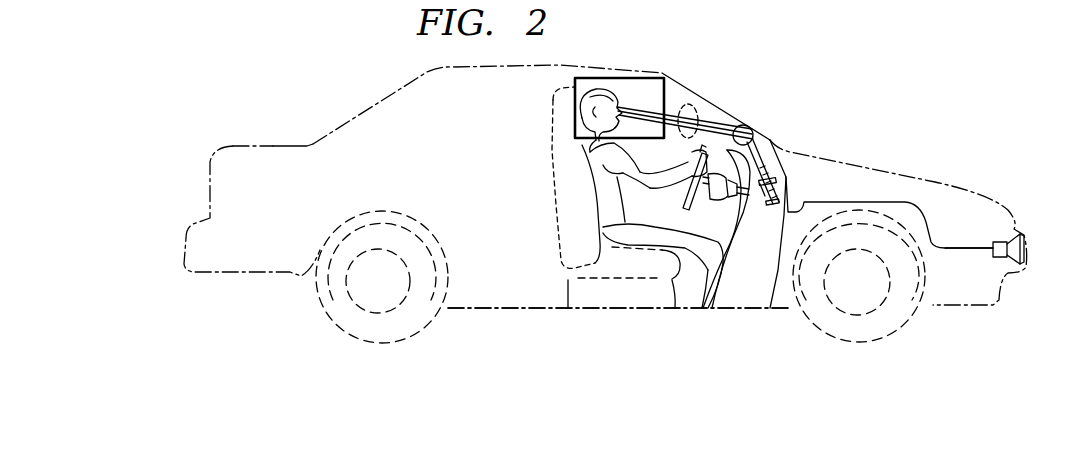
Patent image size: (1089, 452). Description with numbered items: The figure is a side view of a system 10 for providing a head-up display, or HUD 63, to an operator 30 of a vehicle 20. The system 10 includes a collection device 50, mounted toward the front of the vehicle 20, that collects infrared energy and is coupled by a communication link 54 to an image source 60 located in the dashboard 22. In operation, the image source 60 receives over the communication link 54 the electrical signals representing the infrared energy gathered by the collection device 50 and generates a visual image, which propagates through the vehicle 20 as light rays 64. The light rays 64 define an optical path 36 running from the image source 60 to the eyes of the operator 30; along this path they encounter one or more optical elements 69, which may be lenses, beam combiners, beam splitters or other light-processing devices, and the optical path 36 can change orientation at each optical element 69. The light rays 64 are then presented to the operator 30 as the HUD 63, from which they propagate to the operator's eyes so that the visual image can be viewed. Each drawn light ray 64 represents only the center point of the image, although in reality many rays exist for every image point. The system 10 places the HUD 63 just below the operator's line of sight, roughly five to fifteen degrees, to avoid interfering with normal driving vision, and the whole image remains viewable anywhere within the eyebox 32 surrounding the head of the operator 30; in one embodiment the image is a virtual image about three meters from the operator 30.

The system 10 is at (856, 76).
The vehicle 20 is at (292, 146).
The dashboard 22 is at (741, 309).
The operator 30 is at (573, 101).
The eyebox 32 is at (622, 77).
The optical path 36 is at (693, 104).
The HUD 63 is at (742, 125).
The optical elements 69 is at (771, 139).
The image source 60 is at (771, 206).
The light rays 64 is at (747, 195).
The communication link 54 is at (965, 247).
The collection device 50 is at (1027, 252).